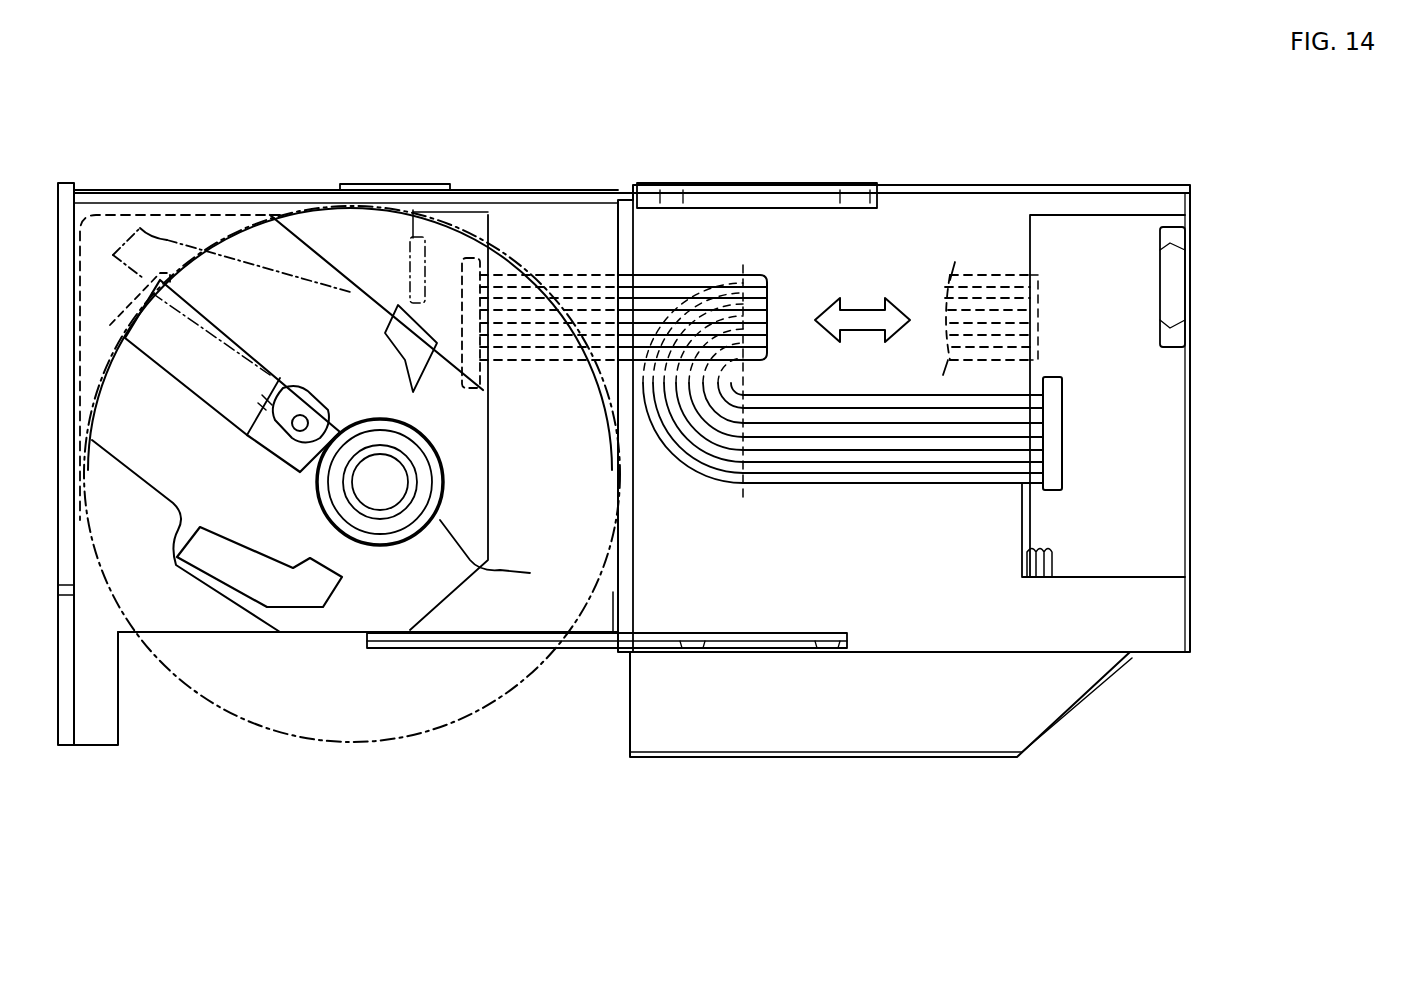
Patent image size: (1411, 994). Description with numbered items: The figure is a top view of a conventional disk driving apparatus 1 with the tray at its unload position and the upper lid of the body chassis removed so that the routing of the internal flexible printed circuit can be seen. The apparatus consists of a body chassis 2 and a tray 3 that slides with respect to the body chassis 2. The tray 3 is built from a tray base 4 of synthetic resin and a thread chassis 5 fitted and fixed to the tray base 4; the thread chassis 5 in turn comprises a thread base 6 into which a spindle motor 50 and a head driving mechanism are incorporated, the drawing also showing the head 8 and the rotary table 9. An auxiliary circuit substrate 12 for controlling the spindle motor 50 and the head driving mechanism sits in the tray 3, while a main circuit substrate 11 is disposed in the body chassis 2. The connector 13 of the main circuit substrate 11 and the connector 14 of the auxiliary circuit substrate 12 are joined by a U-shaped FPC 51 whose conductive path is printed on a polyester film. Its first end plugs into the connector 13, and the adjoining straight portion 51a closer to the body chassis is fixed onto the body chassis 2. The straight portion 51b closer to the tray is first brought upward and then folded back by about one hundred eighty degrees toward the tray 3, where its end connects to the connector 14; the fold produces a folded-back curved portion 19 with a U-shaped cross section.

The disk driving apparatus 1 is at (482, 132).
The body chassis 2 is at (1175, 185).
The tray 3 is at (222, 190).
The tray base 4 is at (110, 240).
The thread chassis 5 is at (318, 632).
The thread base 6 is at (230, 594).
The head 8 is at (247, 437).
The rotary table 9 is at (378, 500).
The main circuit substrate 11 is at (1085, 225).
The auxiliary circuit substrate 12 is at (447, 185).
The connector 13 is at (1055, 395).
The connector 14 is at (466, 388).
The folded-back curved portion 19 is at (787, 300).
The spindle motor 50 is at (441, 507).
The FPC 51 is at (873, 490).
The portion closer to the body chassis 51a is at (960, 486).
The portion closer to the tray 51b is at (653, 290).